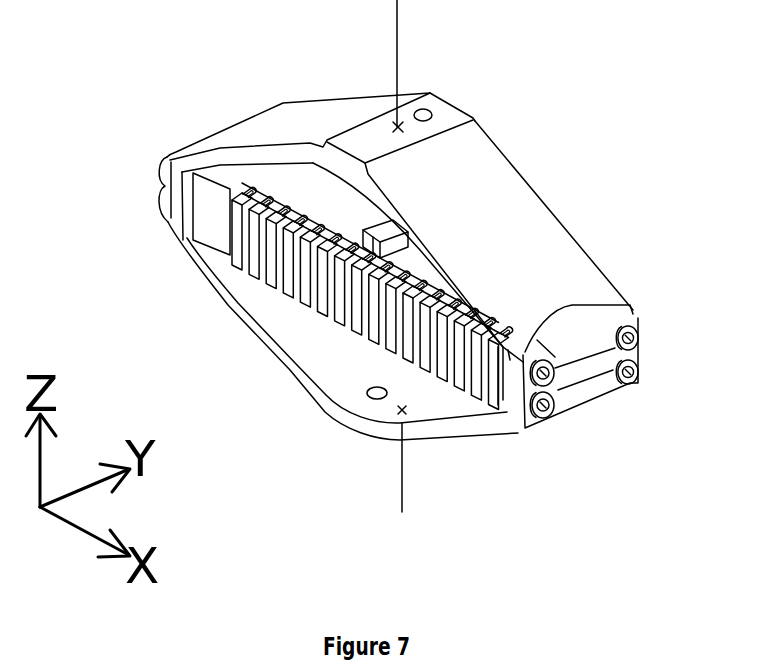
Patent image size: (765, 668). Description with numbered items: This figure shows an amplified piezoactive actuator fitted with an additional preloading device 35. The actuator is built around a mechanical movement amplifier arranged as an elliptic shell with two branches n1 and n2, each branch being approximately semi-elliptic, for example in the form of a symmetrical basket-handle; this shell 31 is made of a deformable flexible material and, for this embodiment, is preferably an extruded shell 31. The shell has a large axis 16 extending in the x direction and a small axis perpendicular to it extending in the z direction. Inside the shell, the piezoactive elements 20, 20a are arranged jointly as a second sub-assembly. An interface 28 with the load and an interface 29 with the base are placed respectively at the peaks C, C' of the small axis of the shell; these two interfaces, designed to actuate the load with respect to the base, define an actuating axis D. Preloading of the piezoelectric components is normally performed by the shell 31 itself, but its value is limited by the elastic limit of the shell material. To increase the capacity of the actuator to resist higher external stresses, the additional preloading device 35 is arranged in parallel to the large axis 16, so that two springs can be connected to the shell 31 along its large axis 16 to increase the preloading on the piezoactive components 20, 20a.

The large axis 16 is at (623, 317).
The piezoactive element 20 is at (416, 280).
The piezoactive element 20a is at (432, 260).
The interface with the load 28 is at (443, 117).
The interface with the base 29 is at (363, 437).
The actuator shell 31 is at (508, 350).
The additional preloading device 35 is at (457, 290).
The branch n1 is at (313, 116).
The branch n2 is at (507, 183).
The peak of the small axis C is at (423, 66).
The peak of the small axis C' is at (441, 479).
The actuating axis D is at (382, 262).